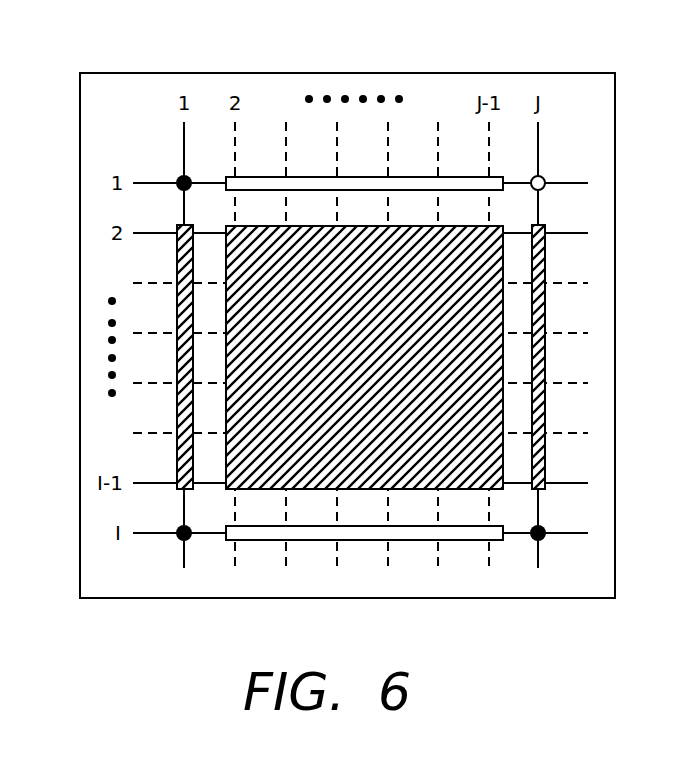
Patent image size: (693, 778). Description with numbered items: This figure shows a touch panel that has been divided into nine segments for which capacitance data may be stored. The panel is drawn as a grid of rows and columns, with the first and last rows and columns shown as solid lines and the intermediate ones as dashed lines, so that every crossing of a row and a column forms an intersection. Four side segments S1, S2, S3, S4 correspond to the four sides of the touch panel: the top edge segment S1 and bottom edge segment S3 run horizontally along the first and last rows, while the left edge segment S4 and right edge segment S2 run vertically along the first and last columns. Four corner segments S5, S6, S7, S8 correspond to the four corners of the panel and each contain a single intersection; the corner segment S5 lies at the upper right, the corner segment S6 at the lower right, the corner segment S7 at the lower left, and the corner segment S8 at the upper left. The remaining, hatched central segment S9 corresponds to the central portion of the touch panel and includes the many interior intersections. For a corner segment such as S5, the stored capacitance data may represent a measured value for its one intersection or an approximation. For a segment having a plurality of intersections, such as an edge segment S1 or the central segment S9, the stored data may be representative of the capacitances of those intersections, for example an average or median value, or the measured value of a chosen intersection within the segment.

The side segment S1 is at (307, 176).
The side segment S2 is at (545, 368).
The side segment S3 is at (397, 540).
The side segment S4 is at (177, 455).
The corner segment S5 is at (545, 178).
The corner segment S6 is at (545, 528).
The corner segment S7 is at (184, 533).
The corner segment S8 is at (184, 183).
The central segment S9 is at (498, 312).